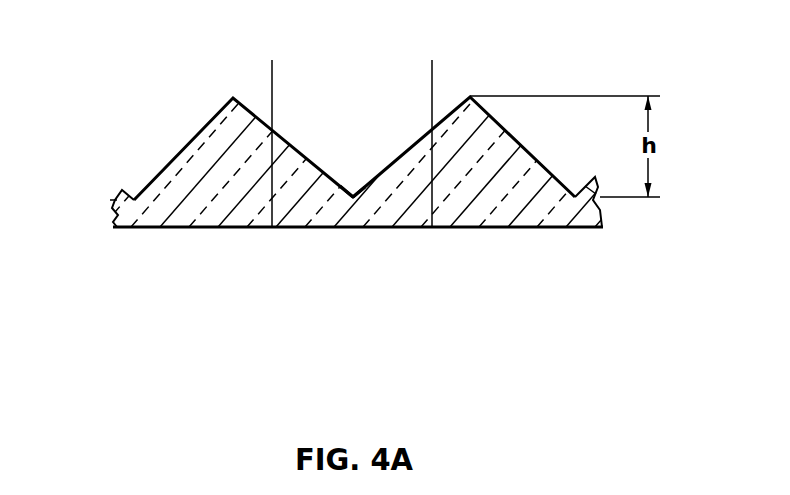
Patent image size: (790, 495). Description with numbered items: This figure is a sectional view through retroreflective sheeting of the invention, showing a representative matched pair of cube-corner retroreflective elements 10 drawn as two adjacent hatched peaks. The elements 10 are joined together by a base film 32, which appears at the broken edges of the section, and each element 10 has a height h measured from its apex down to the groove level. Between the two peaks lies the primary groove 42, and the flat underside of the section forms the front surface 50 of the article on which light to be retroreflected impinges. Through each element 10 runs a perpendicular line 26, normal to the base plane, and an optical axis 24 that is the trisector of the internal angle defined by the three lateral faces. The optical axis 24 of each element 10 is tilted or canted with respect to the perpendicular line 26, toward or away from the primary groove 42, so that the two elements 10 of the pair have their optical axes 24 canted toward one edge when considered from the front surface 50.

The cube-corner retroreflective element 10 is at (213, 183).
The optical axis 24 is at (267, 225).
The perpendicular line 26 is at (272, 76).
The base film 32 is at (117, 202).
The primary groove 42 is at (352, 194).
The front surface 50 is at (562, 230).